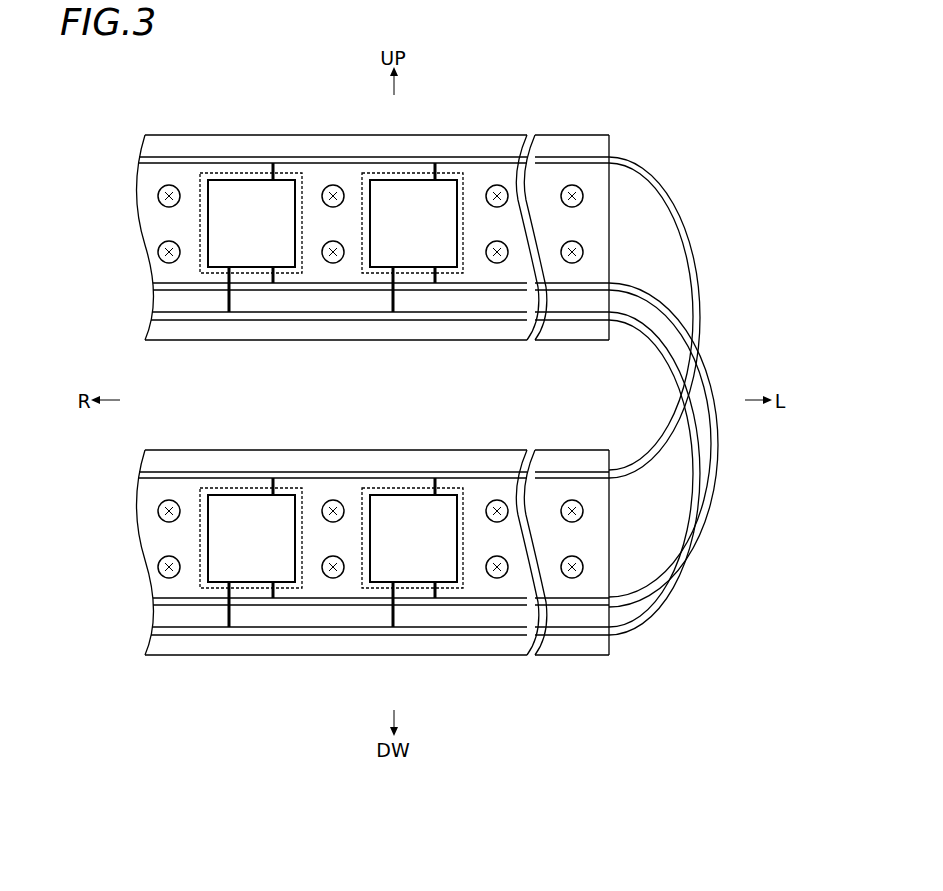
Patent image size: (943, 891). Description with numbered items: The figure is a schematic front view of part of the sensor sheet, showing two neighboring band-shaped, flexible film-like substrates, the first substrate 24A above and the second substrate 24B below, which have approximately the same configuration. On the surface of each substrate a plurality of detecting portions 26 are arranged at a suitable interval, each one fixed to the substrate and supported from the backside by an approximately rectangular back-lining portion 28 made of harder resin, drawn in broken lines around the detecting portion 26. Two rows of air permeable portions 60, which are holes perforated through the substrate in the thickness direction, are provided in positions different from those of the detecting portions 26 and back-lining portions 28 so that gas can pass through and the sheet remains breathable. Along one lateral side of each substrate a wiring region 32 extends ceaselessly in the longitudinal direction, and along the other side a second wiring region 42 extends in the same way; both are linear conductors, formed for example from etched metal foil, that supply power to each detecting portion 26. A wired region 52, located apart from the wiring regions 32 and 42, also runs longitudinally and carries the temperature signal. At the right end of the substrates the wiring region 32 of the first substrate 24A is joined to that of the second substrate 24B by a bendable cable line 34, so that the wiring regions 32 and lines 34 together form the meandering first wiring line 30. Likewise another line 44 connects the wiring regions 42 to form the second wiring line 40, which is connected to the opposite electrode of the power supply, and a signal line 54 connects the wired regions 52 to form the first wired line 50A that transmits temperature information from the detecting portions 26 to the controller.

The first substrate 24A is at (290, 135).
The second substrate 24B is at (290, 450).
The detecting portion 26 is at (245, 180).
The back-lining portion 28 is at (200, 193).
The first wiring line 30 is at (460, 274).
The wiring region 32 is at (460, 160).
The line 34 is at (683, 222).
The second wiring line 40 is at (467, 481).
The wiring region 42 is at (418, 290).
The line 44 is at (645, 292).
The first wired line 50A is at (487, 504).
The wired region 52 is at (243, 320).
The signal line 54 is at (698, 453).
The air permeable portion 60 is at (169, 185).